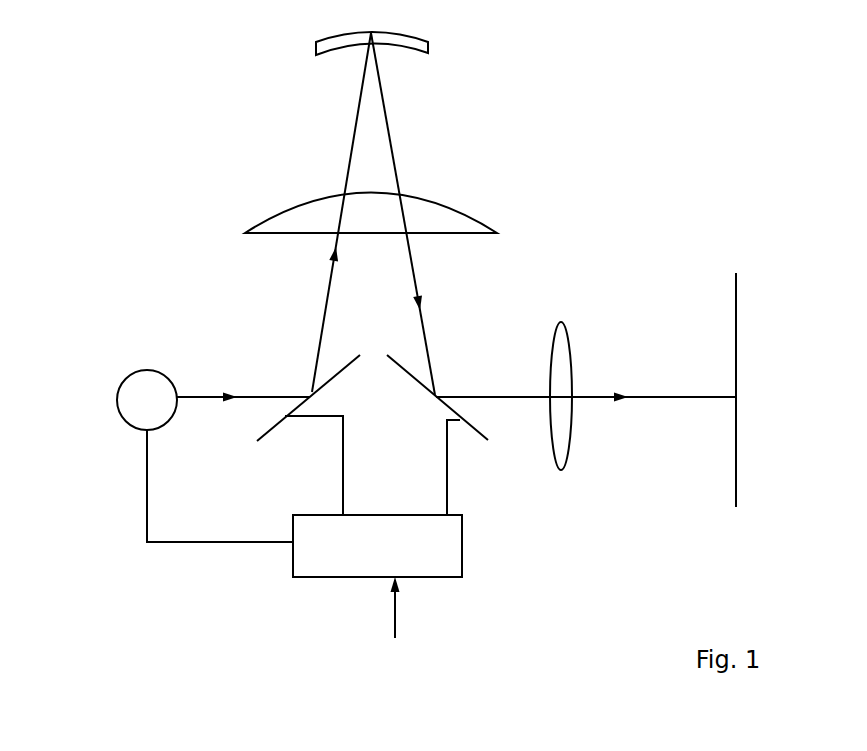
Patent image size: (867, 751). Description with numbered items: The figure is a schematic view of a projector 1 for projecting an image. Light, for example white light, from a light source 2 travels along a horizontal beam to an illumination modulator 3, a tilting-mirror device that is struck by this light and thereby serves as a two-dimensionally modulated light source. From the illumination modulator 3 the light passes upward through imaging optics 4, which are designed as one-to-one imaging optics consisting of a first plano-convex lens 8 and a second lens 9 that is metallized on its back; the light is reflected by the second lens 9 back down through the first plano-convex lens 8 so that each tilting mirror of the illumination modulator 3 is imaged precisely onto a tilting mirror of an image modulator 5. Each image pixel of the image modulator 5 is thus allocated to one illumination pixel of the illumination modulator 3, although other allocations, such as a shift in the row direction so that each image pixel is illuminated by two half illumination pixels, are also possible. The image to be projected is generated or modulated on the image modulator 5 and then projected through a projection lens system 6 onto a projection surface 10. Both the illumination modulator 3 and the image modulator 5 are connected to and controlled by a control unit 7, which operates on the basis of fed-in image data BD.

The projector 1 is at (172, 107).
The light source 2 is at (115, 415).
The illumination modulator 3 is at (280, 430).
The imaging optics 4 is at (195, 220).
The image modulator 5 is at (475, 433).
The projection lens system 6 is at (568, 458).
The control unit 7 is at (447, 577).
The first plano-convex lens 8 is at (470, 235).
The second lens 9 is at (412, 46).
The projection surface 10 is at (736, 507).
The image data BD is at (390, 608).